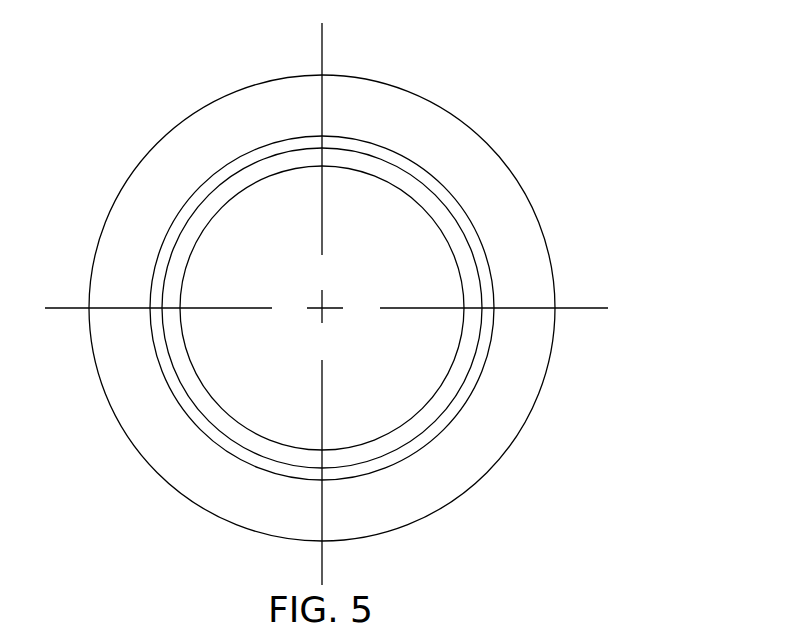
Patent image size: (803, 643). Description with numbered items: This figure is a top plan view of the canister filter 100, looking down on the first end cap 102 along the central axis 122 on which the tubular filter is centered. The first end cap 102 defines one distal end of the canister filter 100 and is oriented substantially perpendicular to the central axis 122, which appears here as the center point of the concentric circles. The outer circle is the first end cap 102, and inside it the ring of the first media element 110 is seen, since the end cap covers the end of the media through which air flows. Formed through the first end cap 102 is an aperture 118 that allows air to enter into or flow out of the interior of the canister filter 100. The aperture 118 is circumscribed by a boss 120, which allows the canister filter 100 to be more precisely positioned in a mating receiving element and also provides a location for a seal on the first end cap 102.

The canister filter 100 is at (367, 292).
The first end cap 102 is at (513, 173).
The first media element 110 is at (182, 208).
The aperture 118 is at (335, 212).
The boss 120 is at (240, 178).
The central axis 122 is at (323, 307).